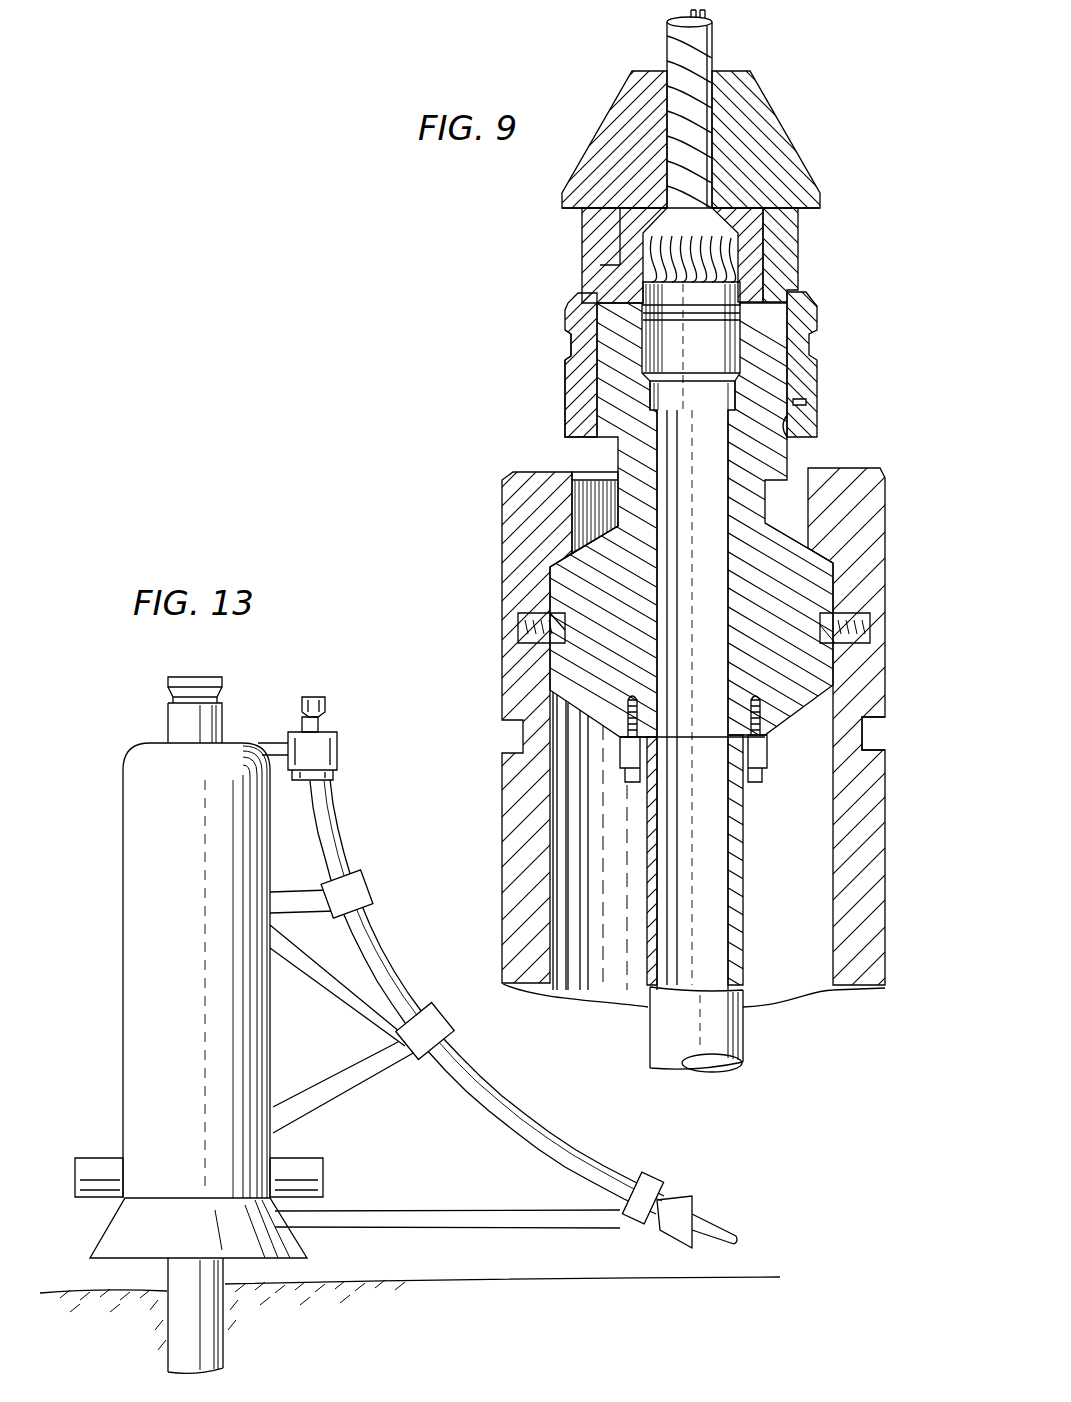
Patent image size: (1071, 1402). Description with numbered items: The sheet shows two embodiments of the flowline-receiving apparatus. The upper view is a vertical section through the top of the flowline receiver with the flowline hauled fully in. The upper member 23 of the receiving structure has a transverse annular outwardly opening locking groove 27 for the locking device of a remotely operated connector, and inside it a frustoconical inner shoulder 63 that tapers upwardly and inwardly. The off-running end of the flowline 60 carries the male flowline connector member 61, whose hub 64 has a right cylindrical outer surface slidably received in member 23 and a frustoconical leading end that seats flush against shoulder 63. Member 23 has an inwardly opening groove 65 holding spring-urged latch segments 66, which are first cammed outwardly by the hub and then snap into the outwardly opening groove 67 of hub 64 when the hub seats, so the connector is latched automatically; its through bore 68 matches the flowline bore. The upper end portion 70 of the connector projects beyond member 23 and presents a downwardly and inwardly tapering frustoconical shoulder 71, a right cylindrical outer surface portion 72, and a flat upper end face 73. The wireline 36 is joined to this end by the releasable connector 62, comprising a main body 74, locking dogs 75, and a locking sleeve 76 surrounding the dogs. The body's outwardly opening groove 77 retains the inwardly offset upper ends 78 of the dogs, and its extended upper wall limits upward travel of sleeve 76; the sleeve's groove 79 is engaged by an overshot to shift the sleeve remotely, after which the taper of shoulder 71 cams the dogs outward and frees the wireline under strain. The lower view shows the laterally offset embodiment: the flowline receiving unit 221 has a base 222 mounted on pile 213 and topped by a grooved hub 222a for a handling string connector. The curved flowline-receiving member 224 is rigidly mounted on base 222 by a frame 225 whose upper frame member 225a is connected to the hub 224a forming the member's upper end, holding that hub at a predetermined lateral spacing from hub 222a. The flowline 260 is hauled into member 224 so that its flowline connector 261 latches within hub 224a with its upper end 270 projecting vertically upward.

In FIG. 9, the wireline 36 is at (686, 77).
In FIG. 9, the main body 74 is at (755, 105).
In FIG. 9, the releasable connector 62 is at (826, 193).
In FIG. 9, the upper end face 73 is at (782, 292).
In FIG. 9, the groove 77 is at (599, 212).
In FIG. 9, the upper ends of the locking dogs 78 is at (785, 215).
In FIG. 9, the upper end portion 70 is at (776, 369).
In FIG. 9, the locking dogs 75 is at (800, 320).
In FIG. 9, the groove 79 is at (568, 335).
In FIG. 9, the locking sleeve 76 is at (566, 378).
In FIG. 9, the outer surface portion 72 is at (800, 388).
In FIG. 9, the frustoconical shoulder 71 is at (786, 420).
In FIG. 9, the member 23 is at (873, 893).
In FIG. 9, the locking groove 27 is at (872, 718).
In FIG. 9, the inner shoulder 63 is at (562, 586).
In FIG. 9, the groove 65 is at (517, 618).
In FIG. 9, the latch segments 66 is at (528, 635).
In FIG. 9, the groove 67 is at (828, 640).
In FIG. 9, the through bore 68 is at (660, 657).
In FIG. 9, the hub 64 is at (578, 703).
In FIG. 9, the male flowline connector member 61 is at (620, 738).
In FIG. 9, the flowline 60 is at (648, 1038).
In FIG. 13, the base 222 is at (124, 1013).
In FIG. 13, the grooved hub 222a is at (167, 727).
In FIG. 13, the upper frame member 225a is at (272, 740).
In FIG. 13, the hub 224a is at (337, 750).
In FIG. 13, the flowline connector 261 is at (320, 728).
In FIG. 13, the upper end 270 is at (312, 697).
In FIG. 13, the curved flowline-receiving member 224 is at (533, 1068).
In FIG. 13, the flowline receiving unit 221 is at (372, 869).
In FIG. 13, the flowline 260 is at (704, 1232).
In FIG. 13, the frame 225 is at (510, 1222).
In FIG. 13, the pile 213 is at (222, 1276).